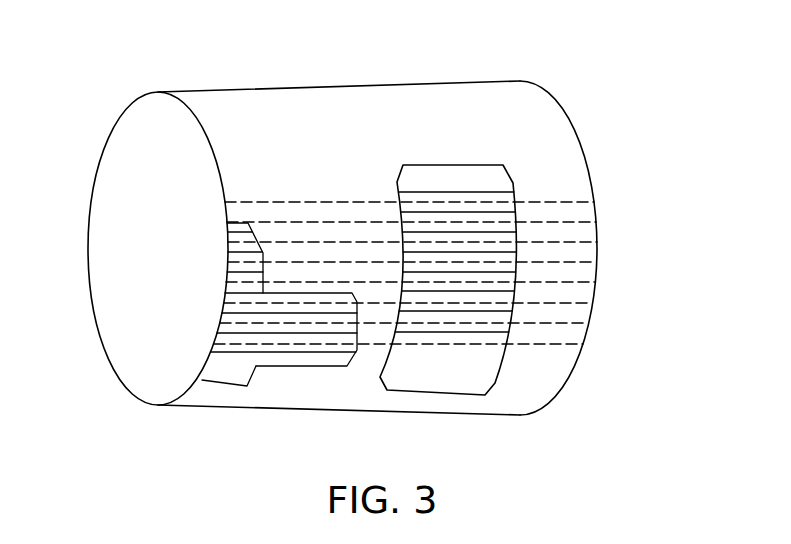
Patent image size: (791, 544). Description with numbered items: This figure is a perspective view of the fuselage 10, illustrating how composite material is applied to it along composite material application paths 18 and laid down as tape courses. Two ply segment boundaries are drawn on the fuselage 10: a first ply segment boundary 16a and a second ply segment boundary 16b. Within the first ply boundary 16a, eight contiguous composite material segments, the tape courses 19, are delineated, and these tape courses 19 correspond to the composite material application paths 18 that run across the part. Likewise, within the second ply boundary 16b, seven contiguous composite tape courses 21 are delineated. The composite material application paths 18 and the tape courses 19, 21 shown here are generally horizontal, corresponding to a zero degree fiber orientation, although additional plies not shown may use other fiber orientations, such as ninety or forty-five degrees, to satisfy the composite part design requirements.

The cylindrical body 10 is at (247, 115).
The first ply segment boundary 16a is at (485, 180).
The second ply segment boundary 16b is at (227, 370).
The composite material application paths 18 is at (562, 203).
The tape courses 19 is at (438, 176).
The composite tape courses 21 is at (280, 364).